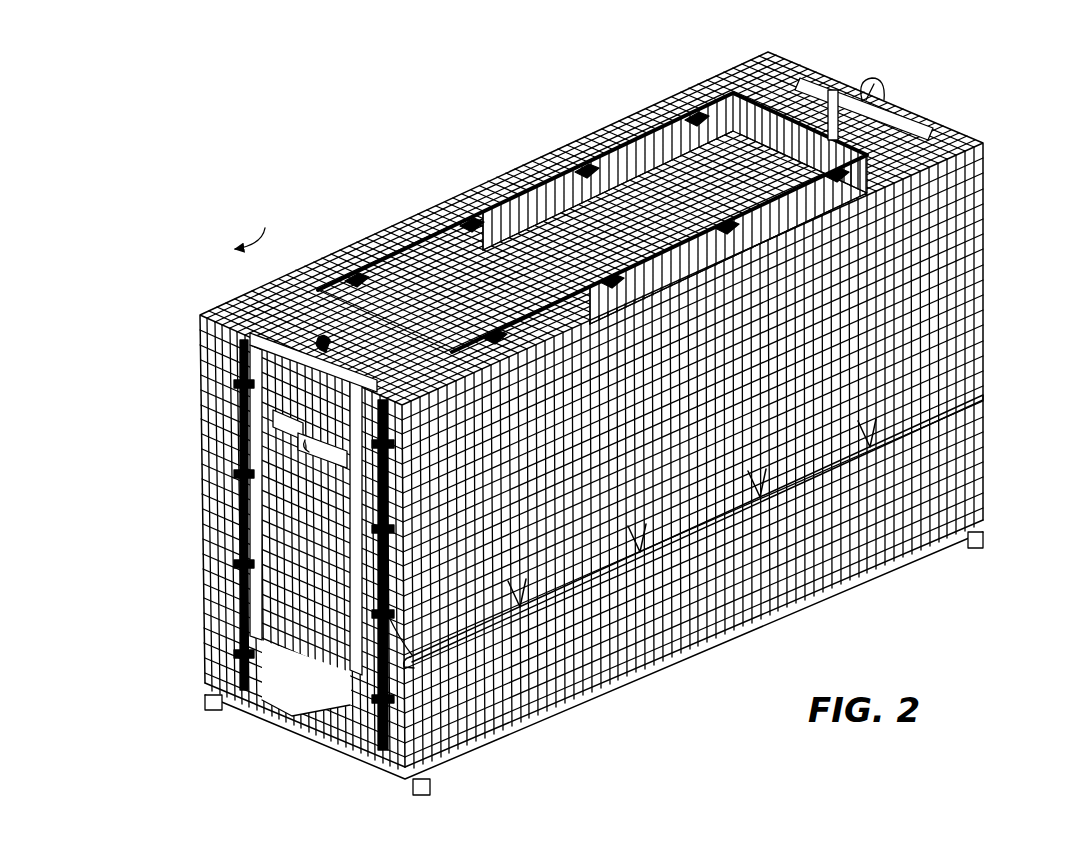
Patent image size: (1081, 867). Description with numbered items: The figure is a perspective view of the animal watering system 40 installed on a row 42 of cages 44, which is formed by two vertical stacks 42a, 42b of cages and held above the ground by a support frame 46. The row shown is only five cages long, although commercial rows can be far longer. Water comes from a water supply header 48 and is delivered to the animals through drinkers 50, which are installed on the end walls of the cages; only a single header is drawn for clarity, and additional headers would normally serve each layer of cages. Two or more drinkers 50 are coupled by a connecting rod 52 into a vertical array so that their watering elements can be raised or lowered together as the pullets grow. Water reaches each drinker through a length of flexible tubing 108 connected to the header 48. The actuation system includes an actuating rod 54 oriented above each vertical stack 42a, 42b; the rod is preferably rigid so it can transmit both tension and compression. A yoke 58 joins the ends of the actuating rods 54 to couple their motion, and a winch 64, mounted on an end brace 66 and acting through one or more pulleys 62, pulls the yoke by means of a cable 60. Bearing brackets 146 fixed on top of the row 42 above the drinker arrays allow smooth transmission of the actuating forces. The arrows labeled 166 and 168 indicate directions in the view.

The animal watering system 40 is at (476, 107).
The row 42 is at (1008, 168).
The vertical stack 42a is at (252, 722).
The vertical stack 42b is at (400, 776).
The cage 44 is at (692, 457).
The support frame 46 is at (455, 782).
The water supply header 48 is at (992, 394).
The drinker 50 is at (372, 708).
The connecting rod 52 is at (393, 578).
The actuating rod 54 is at (400, 231).
The yoke 58 is at (396, 334).
The cable 60 is at (302, 412).
The pulley 62 is at (317, 343).
The winch 64 is at (321, 470).
The end brace 66 is at (236, 368).
The flexible tubing 108 is at (430, 650).
The bearing bracket 146 is at (485, 333).
The direction arrow 166 is at (260, 222).
The direction arrow 168 is at (604, 88).